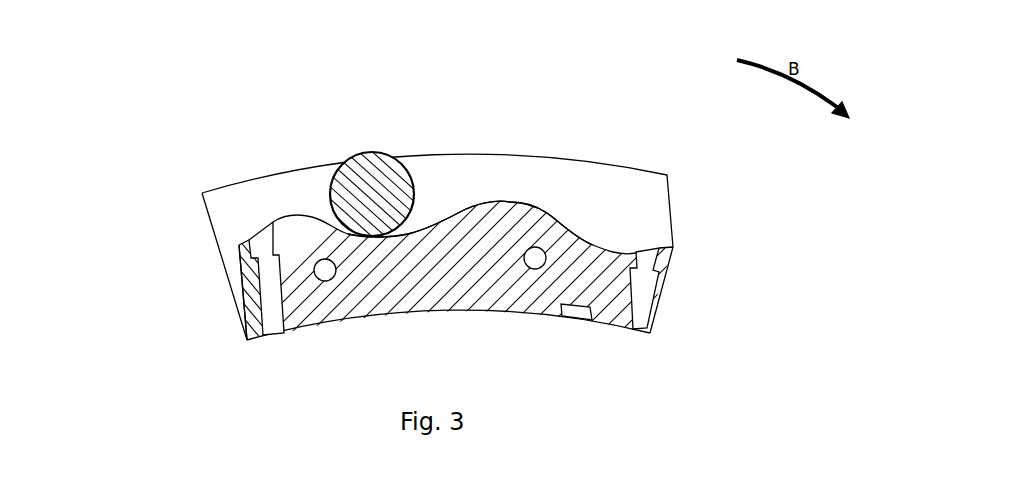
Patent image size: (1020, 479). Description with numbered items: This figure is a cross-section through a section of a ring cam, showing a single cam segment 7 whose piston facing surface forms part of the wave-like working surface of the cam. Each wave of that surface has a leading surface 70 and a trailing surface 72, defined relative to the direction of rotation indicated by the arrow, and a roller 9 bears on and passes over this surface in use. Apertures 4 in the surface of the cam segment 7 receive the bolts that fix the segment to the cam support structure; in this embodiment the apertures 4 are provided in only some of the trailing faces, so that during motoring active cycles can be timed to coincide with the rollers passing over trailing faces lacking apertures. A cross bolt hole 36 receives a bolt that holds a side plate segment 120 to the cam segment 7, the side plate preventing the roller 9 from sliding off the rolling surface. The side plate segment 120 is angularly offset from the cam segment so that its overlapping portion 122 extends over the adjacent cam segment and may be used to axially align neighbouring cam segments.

The aperture 4 is at (257, 243).
The cam segment 7 is at (262, 305).
The roller 9 is at (362, 170).
The cross bolt hole 36 is at (325, 281).
The leading surface 70 is at (528, 206).
The trailing surface 72 is at (450, 220).
The side plate segment 120 is at (281, 190).
The overlapping portion 122 is at (238, 277).